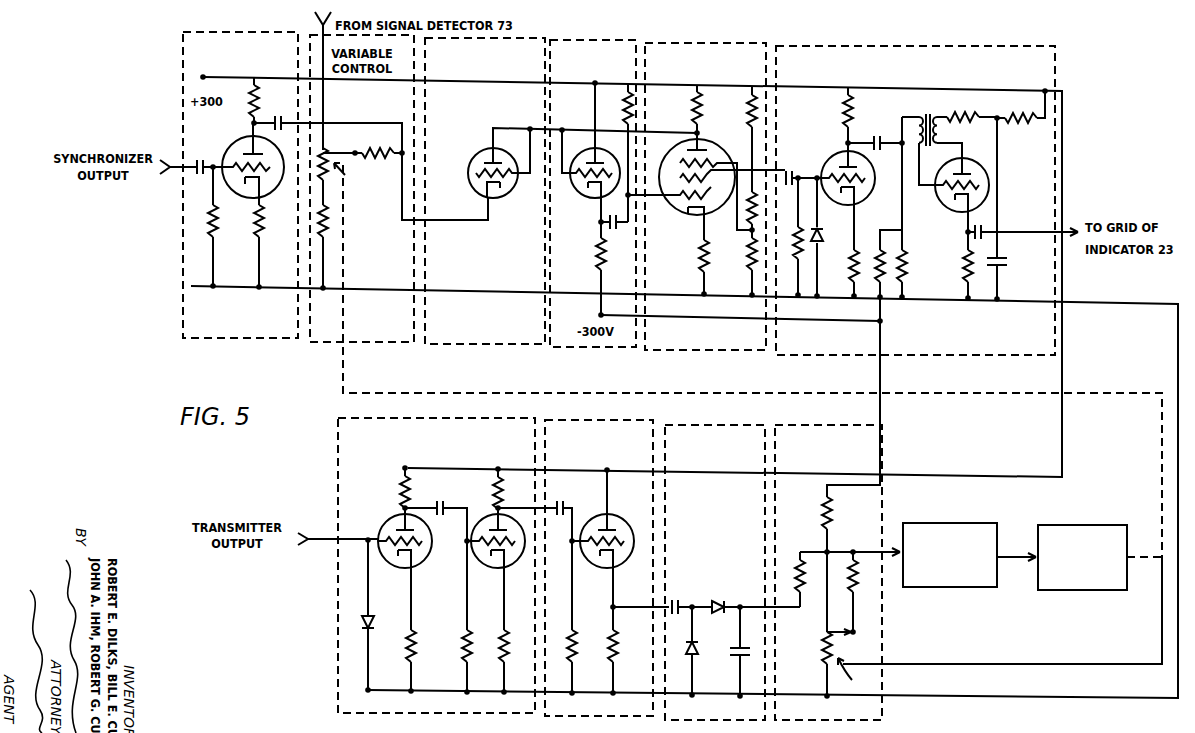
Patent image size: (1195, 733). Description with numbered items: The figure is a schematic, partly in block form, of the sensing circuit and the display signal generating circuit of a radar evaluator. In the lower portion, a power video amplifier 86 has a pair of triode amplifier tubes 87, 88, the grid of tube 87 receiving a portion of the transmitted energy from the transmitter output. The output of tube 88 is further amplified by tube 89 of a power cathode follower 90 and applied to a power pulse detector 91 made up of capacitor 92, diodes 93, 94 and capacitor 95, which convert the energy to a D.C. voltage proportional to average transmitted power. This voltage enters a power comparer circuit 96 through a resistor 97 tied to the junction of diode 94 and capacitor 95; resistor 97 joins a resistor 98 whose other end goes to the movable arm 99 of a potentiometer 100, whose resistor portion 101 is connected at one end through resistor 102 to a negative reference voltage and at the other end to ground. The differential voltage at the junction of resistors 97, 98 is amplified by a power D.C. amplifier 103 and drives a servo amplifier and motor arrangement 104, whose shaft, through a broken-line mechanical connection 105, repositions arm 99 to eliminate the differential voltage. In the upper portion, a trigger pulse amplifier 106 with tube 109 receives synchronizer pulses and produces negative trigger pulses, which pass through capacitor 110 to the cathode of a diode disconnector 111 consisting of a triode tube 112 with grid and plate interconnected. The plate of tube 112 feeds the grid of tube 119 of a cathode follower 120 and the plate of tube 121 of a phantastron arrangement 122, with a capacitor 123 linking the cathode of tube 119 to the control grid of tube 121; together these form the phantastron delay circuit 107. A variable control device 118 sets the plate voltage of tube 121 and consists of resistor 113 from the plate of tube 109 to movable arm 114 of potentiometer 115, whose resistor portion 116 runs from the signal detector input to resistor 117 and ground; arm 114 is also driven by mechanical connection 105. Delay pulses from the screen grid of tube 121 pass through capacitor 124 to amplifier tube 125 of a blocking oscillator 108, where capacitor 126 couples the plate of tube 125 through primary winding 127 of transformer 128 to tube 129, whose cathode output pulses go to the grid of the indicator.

The trigger pulse amplifier 106 is at (190, 33).
The tube 109 is at (248, 141).
The capacitor 110 is at (276, 116).
The variable control device 118 is at (316, 23).
The potentiometer 115 is at (346, 176).
The movable arm 114 is at (350, 151).
The resistor 113 is at (385, 158).
The resistor 117 is at (327, 226).
The resistor portion 116 is at (302, 190).
The diode disconnector 111 is at (523, 43).
The triode tube 112 is at (478, 150).
The phantastron delay circuit 107 is at (560, 34).
The tube 119 is at (583, 215).
The capacitor 123 is at (615, 270).
The cathode follower 120 is at (637, 45).
The tube 121 is at (706, 142).
The phantastron arrangement 122 is at (733, 45).
The blocking oscillator 108 is at (997, 57).
The capacitor 124 is at (795, 172).
The amplifier tube 125 is at (840, 158).
The primary winding 127 is at (855, 128).
The capacitor 126 is at (878, 150).
The transformer 128 is at (946, 132).
The tube 129 is at (984, 173).
The power video amplifier 86 is at (497, 421).
The triode amplifier tube 87 is at (397, 520).
The triode amplifier tube 88 is at (497, 568).
The power cathode follower 90 is at (618, 423).
The tube 89 is at (608, 520).
The power pulse detector 91 is at (762, 426).
The capacitor 92 is at (681, 597).
The diode 94 is at (726, 598).
The diode 93 is at (686, 652).
The capacitor 95 is at (738, 658).
The power comparer circuit 96 is at (798, 426).
The resistor 102 is at (832, 505).
The resistor 97 is at (800, 562).
The resistor 98 is at (857, 575).
The movable arm 99 is at (836, 618).
The resistor portion 101 is at (818, 648).
The potentiometer 100 is at (856, 675).
The power D.C. amplifier 103 is at (948, 523).
The servo amplifier and motor arrangement 104 is at (1062, 526).
The mechanical connection 105 is at (1160, 625).